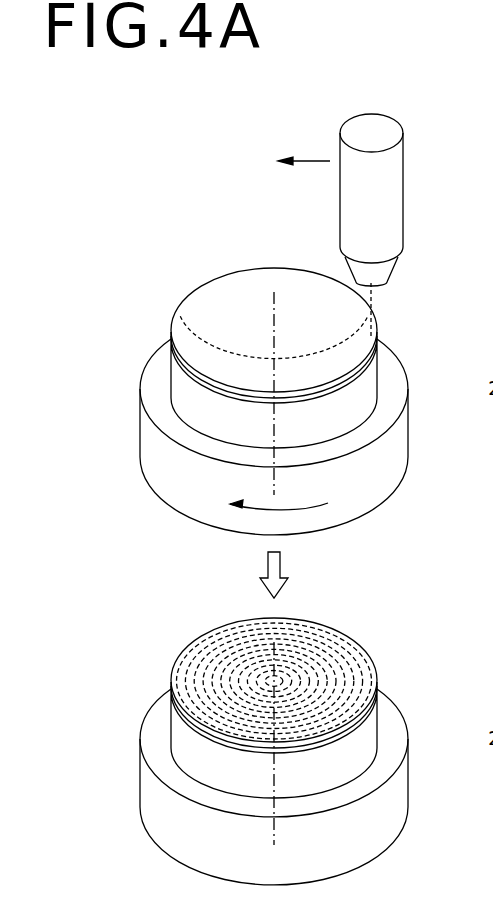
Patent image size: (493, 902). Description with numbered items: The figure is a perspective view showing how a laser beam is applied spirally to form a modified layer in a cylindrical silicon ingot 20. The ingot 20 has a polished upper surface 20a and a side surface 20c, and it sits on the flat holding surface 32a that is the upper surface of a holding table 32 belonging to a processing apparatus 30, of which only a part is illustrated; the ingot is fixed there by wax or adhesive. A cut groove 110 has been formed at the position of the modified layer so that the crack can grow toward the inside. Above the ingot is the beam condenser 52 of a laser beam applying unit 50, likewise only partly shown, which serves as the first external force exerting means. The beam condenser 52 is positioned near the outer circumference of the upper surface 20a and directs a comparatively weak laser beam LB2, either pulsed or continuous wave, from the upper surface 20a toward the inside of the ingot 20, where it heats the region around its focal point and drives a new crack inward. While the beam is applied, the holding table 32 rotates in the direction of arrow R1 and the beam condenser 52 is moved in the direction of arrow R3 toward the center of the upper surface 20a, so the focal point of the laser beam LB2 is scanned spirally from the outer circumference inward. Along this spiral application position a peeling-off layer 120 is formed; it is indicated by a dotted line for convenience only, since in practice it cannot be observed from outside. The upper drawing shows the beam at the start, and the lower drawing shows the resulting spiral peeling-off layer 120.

The ingot 20 is at (250, 481).
The upper surface 20a is at (205, 307).
The side surface 20c is at (183, 399).
The processing apparatus 30 is at (286, 576).
The holding table 32 is at (311, 612).
The holding surface 32a is at (392, 385).
The cut groove 110 is at (352, 385).
The peeling-off layer 120 is at (203, 367).
The laser beam applying unit 50 is at (402, 200).
The beam condenser 52 is at (390, 218).
The laser beam LB2 is at (373, 292).
The arrow R1 is at (288, 505).
The arrow R3 is at (317, 161).